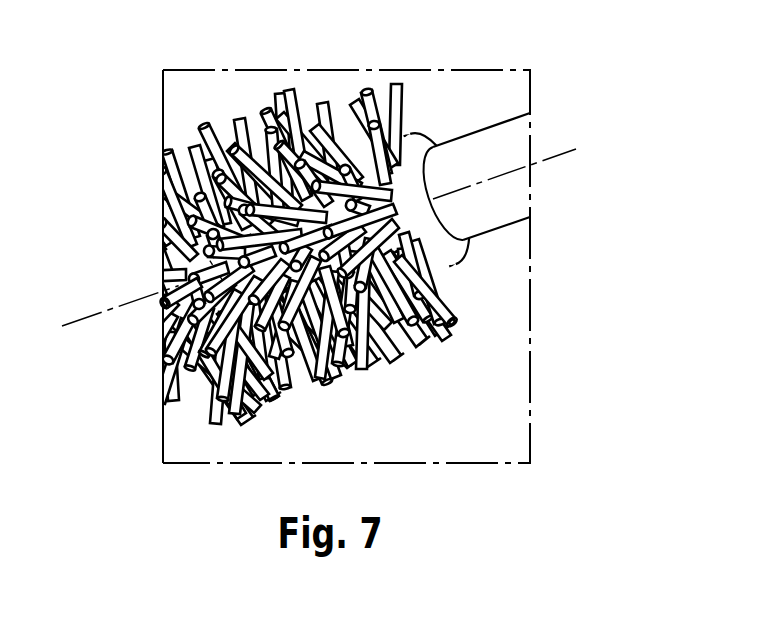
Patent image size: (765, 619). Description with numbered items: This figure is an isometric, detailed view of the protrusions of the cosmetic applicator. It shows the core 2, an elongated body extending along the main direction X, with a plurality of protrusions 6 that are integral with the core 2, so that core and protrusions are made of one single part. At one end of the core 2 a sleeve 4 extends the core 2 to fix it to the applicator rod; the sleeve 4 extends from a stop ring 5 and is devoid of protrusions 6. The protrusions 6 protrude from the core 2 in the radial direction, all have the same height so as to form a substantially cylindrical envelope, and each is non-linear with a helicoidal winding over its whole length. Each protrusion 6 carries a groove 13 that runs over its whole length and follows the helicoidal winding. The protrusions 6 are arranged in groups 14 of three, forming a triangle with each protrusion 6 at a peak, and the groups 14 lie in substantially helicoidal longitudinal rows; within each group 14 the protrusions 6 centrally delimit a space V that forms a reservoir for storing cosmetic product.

The core 2 is at (427, 228).
The sleeve 4 is at (512, 142).
The stop ring 5 is at (413, 131).
The protrusions 6 is at (175, 215).
The groove 13 is at (458, 328).
The group 14 is at (187, 302).
The main direction X is at (104, 312).
The space (volume) V is at (283, 402).